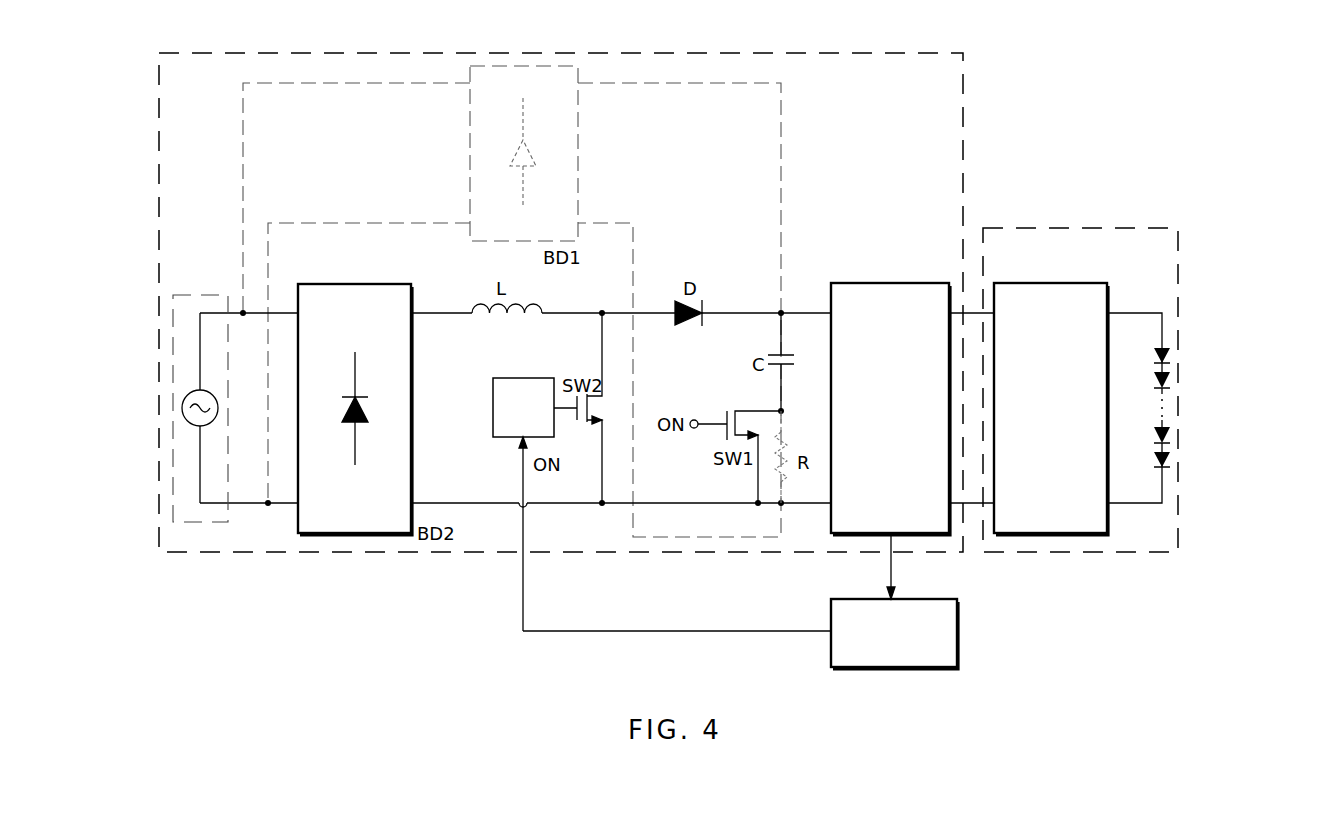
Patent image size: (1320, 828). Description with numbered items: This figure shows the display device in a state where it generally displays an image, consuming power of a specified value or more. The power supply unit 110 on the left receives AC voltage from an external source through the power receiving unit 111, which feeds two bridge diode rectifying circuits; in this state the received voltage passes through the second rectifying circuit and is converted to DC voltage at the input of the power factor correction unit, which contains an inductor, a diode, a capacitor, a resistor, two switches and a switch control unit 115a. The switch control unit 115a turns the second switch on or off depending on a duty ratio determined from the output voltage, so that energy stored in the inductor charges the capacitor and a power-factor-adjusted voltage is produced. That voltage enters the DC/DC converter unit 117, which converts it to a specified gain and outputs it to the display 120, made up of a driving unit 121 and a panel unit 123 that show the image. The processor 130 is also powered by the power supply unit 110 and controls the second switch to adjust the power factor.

The power supply unit 110 is at (909, 53).
The power receiving unit 111 is at (207, 295).
The switch control unit 115a is at (531, 378).
The DC/DC converter unit 117 is at (891, 283).
The display 120 is at (1125, 228).
The driving unit 121 is at (1050, 283).
The panel unit 123 is at (1170, 343).
The processor 130 is at (958, 631).